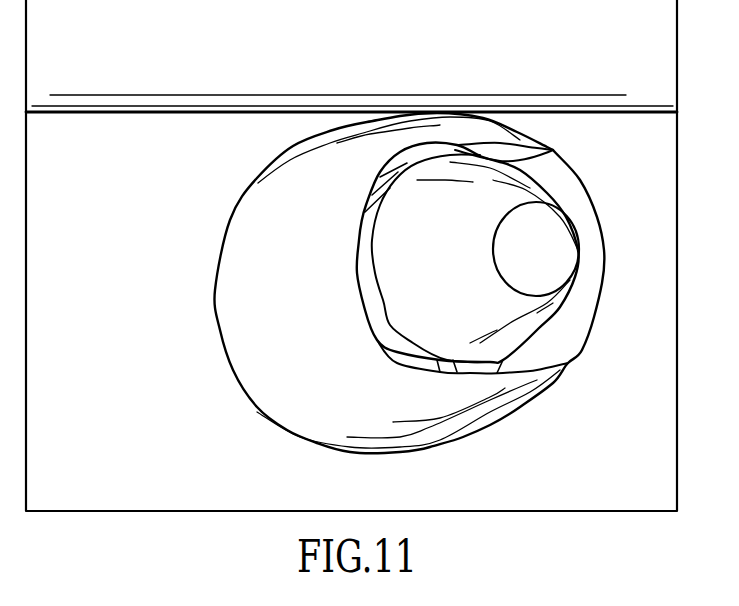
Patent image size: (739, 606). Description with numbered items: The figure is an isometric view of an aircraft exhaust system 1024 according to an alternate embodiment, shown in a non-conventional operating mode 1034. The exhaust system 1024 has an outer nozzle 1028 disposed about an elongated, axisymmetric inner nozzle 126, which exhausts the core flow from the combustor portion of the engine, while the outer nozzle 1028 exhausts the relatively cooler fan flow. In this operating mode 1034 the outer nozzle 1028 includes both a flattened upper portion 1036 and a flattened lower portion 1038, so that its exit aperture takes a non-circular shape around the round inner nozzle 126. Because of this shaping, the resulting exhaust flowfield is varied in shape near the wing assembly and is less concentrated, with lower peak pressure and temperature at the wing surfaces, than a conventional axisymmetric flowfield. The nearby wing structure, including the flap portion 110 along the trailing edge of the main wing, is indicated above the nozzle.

The flap portion 110 is at (192, 80).
The aircraft exhaust system 1024 is at (213, 442).
The non-conventional operating mode 1034 is at (170, 248).
The outer nozzle 1028 is at (342, 222).
The inner nozzle 126 is at (437, 270).
The flattened upper portion 1036 is at (515, 158).
The flattened lower portion 1038 is at (478, 377).